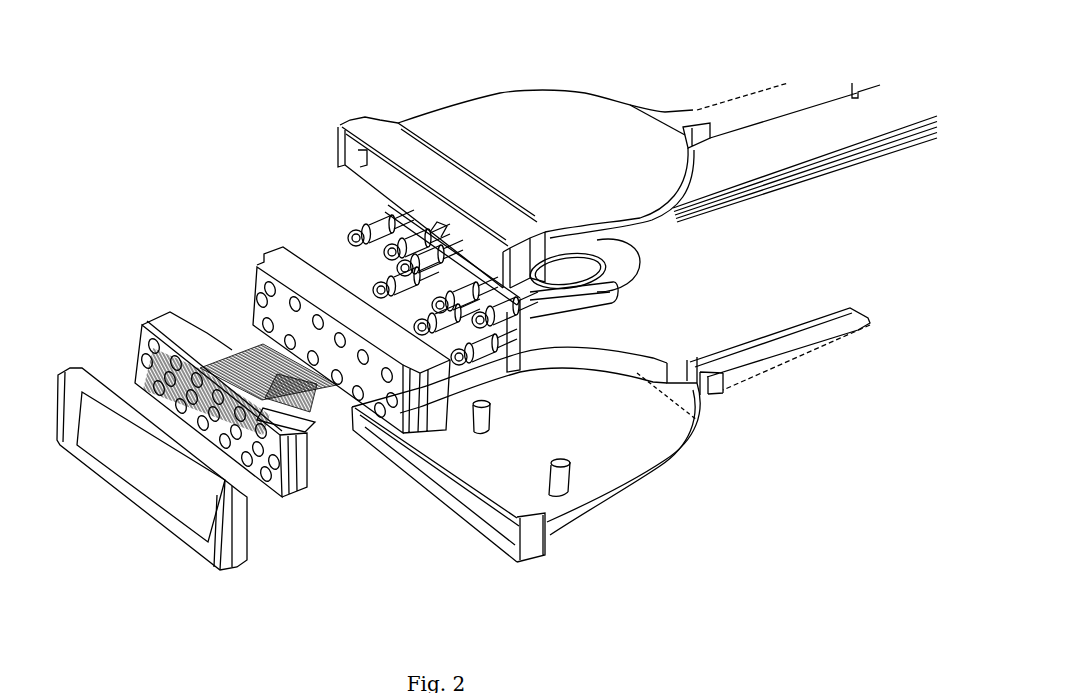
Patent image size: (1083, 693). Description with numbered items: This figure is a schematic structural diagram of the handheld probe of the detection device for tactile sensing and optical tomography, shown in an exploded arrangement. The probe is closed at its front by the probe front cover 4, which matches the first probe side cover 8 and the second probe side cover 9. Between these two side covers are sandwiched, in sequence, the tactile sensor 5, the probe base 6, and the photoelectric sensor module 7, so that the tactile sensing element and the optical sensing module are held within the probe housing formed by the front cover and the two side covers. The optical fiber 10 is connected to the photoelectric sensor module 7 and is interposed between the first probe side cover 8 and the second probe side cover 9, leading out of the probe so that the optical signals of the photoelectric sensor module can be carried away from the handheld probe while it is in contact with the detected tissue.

The probe front cover 4 is at (68, 363).
The tactile sensor 5 is at (161, 327).
The probe base 6 is at (330, 357).
The photoelectric sensor module 7 is at (358, 232).
The first probe side cover 8 is at (583, 182).
The second probe side cover 9 is at (583, 413).
The optical fiber 10 is at (788, 173).